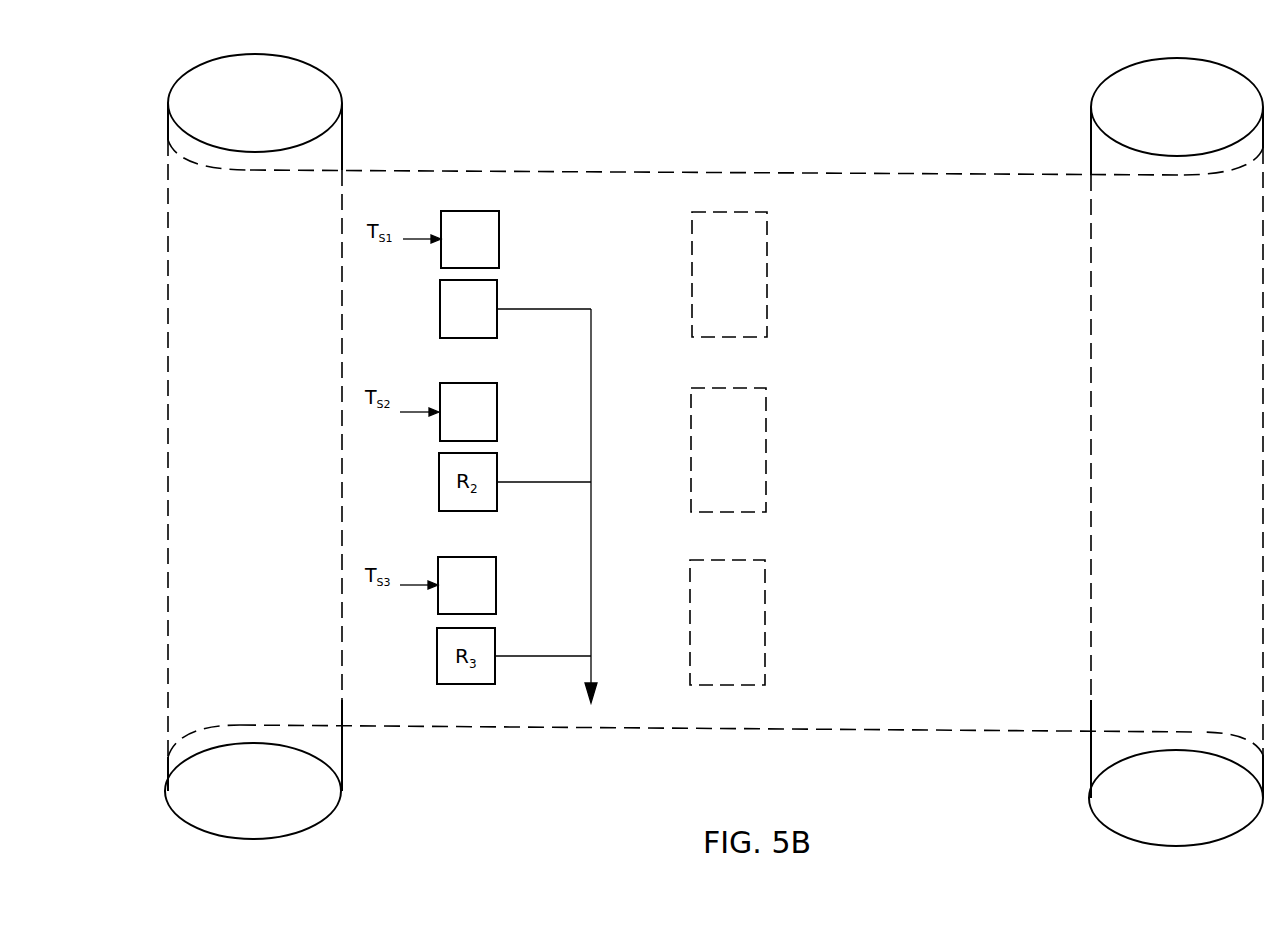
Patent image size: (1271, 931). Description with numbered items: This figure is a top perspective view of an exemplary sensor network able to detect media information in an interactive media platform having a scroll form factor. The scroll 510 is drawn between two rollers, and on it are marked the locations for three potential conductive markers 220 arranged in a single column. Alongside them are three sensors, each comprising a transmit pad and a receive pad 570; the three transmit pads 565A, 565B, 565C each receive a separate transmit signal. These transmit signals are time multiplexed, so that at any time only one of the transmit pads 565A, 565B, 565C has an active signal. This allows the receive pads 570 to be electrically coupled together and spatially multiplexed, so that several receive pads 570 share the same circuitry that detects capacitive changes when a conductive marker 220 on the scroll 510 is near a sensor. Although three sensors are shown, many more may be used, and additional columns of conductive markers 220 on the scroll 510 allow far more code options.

The scroll 510 is at (505, 165).
The transmit pad 565A is at (499, 237).
The transmit pad 565B is at (492, 397).
The transmit pad 565C is at (490, 570).
The receive pad 570 is at (492, 295).
The conductive marker 220 is at (748, 285).